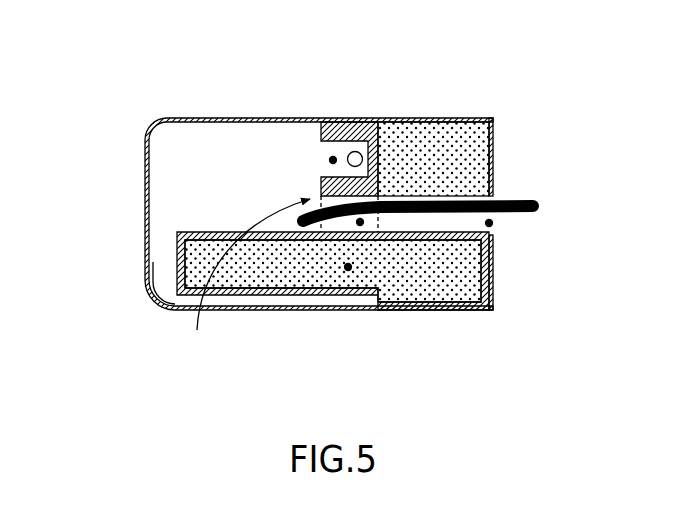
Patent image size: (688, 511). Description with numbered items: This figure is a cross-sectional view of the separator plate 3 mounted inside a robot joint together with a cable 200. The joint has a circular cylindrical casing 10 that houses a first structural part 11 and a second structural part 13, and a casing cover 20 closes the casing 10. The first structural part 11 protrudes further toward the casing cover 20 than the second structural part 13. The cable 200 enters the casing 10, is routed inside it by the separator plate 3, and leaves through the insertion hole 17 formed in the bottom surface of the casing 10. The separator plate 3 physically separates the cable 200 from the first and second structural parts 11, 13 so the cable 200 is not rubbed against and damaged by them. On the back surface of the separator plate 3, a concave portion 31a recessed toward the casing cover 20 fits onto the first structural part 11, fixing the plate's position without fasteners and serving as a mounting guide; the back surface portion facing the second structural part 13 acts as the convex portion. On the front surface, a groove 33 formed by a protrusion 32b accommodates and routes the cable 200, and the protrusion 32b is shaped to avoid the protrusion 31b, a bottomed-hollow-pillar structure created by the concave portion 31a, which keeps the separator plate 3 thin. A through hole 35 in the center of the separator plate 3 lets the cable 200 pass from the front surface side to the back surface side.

The casing 10 is at (299, 213).
The casing cover 20 is at (191, 118).
The protrusion 32b is at (321, 142).
The second structural part 13 is at (462, 152).
The groove 33 is at (330, 160).
The first structural part 11 is at (340, 319).
The concave portion 31a is at (348, 267).
The protrusion 31b is at (177, 266).
The insertion hole 17 is at (489, 223).
The through hole 35 is at (358, 222).
The cable 200 is at (355, 151).
The separator plate 3 is at (249, 277).